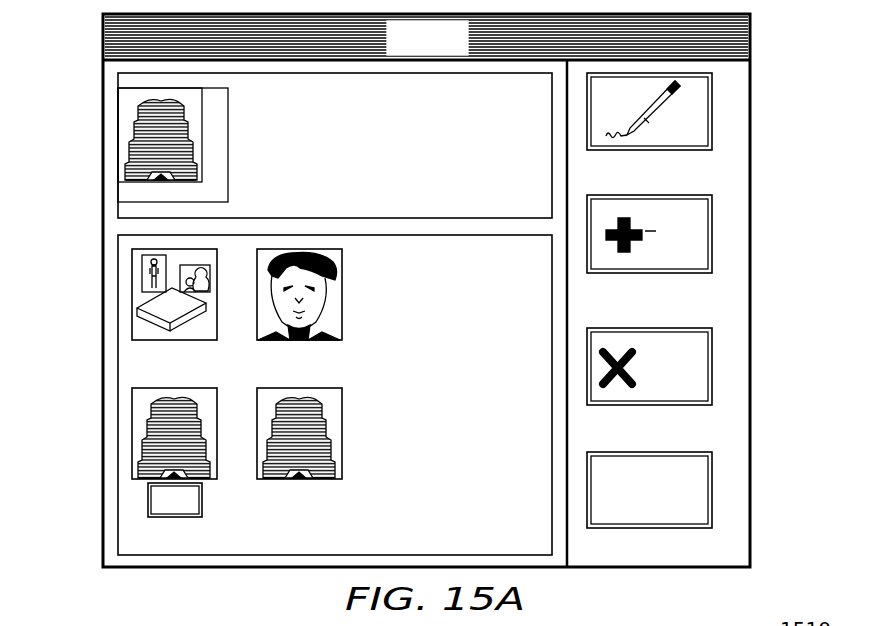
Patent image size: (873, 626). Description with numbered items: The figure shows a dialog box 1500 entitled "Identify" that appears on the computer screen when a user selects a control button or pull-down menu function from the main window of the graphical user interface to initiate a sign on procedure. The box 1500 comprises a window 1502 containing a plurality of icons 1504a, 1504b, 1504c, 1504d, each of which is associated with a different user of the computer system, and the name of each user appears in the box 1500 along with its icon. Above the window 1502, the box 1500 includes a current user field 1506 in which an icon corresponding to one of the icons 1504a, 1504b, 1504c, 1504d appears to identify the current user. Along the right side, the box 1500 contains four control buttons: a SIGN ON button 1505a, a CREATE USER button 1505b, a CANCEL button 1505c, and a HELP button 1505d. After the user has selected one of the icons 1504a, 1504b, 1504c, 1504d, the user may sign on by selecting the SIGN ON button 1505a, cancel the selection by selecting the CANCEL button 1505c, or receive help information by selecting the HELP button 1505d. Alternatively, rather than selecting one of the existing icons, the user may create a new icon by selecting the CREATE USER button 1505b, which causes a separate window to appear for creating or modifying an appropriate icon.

The dialog box 1500 is at (772, 52).
The window 1502 is at (235, 533).
The icon 1504a is at (139, 302).
The icon 1504b is at (139, 468).
The icon 1504c is at (323, 281).
The icon 1504d is at (323, 418).
The SIGN ON button 1505a is at (703, 110).
The CREATE USER button 1505b is at (705, 235).
The CANCEL button 1505c is at (703, 368).
The HELP button 1505d is at (703, 491).
The current user field 1506 is at (527, 183).